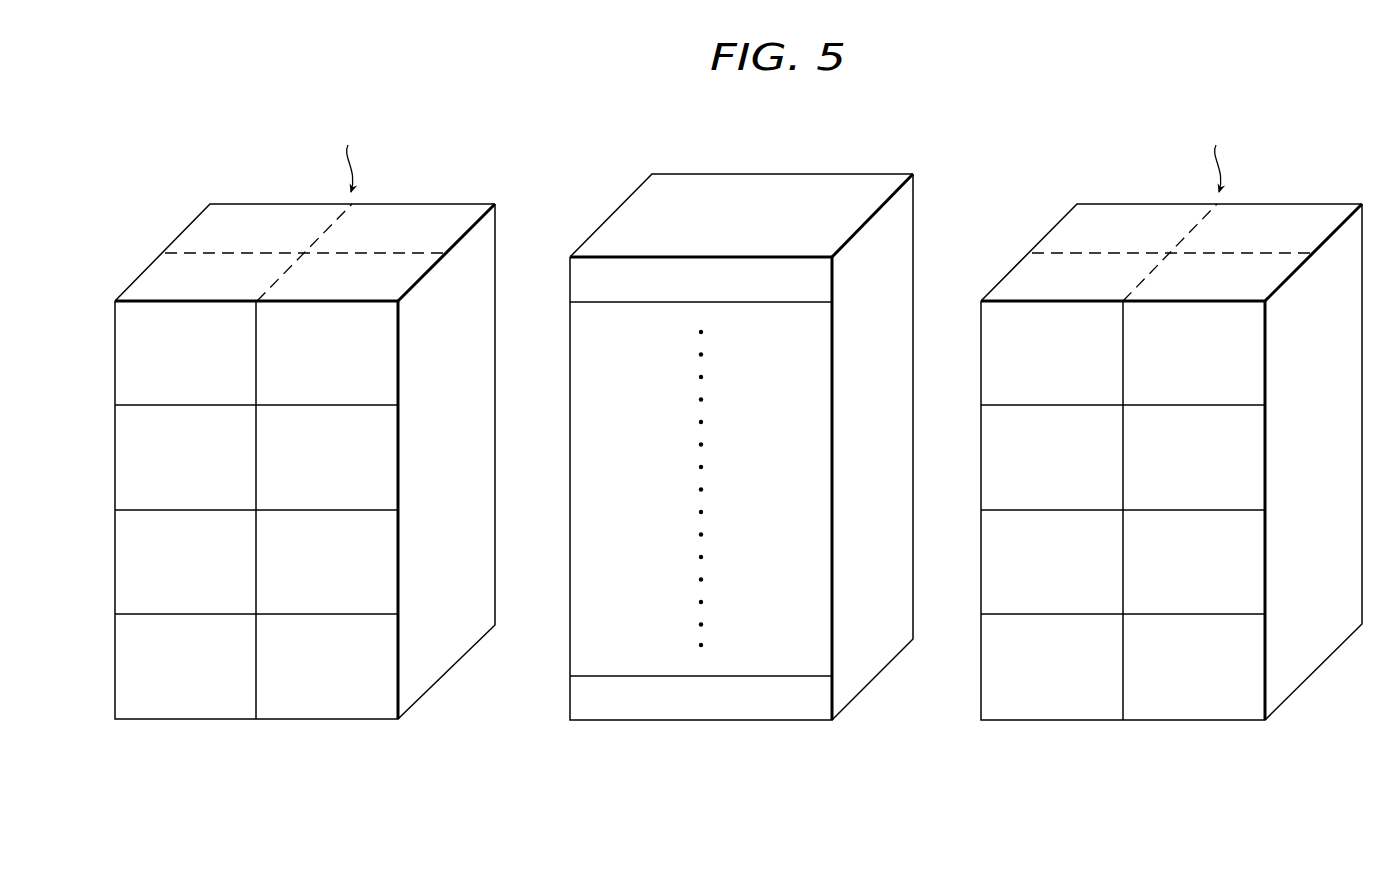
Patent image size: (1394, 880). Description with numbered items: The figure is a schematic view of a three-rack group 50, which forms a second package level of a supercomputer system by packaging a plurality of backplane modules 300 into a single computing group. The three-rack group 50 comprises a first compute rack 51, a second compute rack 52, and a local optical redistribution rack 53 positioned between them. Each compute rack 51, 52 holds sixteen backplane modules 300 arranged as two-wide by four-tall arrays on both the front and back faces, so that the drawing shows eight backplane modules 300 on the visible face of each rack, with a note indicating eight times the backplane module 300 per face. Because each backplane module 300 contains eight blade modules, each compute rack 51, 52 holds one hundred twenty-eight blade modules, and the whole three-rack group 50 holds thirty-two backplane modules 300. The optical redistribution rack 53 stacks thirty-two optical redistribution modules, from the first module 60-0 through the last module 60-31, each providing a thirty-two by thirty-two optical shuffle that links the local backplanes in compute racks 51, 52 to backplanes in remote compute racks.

The three-rack group 50 is at (769, 117).
The first compute rack 51 is at (307, 734).
The second compute rack 52 is at (1176, 733).
The local optical redistribution rack 53 is at (741, 733).
The backplane module 300 is at (690, 510).
The optical redistribution module 60-0 is at (701, 284).
The optical redistribution module 60-31 is at (701, 695).